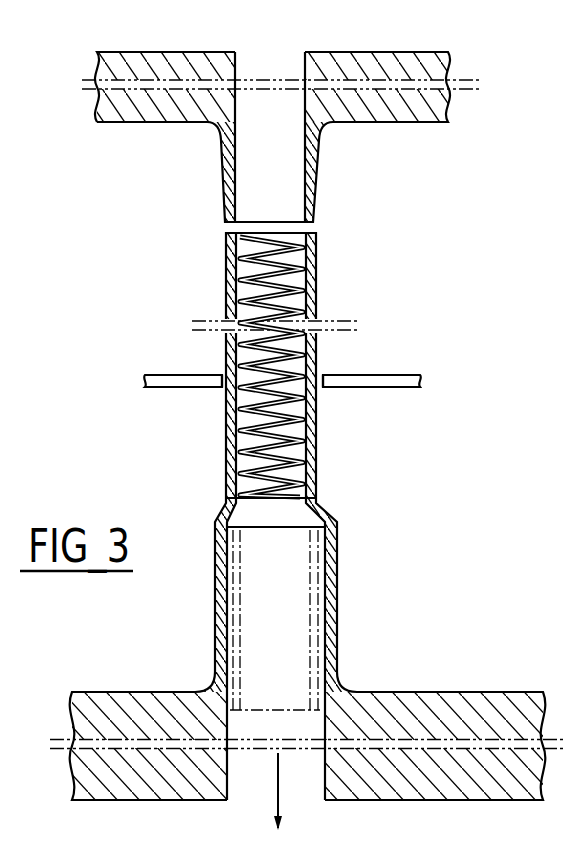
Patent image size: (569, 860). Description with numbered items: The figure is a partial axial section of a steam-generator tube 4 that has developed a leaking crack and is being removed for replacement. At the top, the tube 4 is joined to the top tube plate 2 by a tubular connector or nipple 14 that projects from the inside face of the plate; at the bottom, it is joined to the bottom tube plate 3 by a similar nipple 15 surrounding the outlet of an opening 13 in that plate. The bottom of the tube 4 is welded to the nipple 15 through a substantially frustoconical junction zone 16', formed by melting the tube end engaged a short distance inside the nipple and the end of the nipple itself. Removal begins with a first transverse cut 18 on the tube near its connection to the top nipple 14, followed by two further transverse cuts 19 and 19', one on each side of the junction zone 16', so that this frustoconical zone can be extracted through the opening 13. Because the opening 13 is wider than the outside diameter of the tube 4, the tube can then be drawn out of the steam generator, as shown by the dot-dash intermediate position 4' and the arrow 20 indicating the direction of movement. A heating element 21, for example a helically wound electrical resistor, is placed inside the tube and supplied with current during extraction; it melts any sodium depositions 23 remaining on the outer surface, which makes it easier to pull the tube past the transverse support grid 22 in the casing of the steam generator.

The top tube plate 2 is at (349, 68).
The top connector (nipple) 14 is at (222, 178).
The first transverse cut 18 is at (308, 230).
The heating element 21 is at (260, 290).
The sodium depositions 23 is at (226, 370).
The grid 22 is at (156, 388).
The tube 4 is at (285, 365).
The transverse cut 19 is at (248, 479).
The welded junction zone 16' is at (341, 500).
The transverse cut 19' is at (200, 519).
The bottom connector (nipple) 15 is at (215, 622).
The intermediate position of tube 4' is at (288, 609).
The bottom tube plate 3 is at (432, 781).
The opening 13 is at (303, 787).
The arrow 20 is at (272, 790).